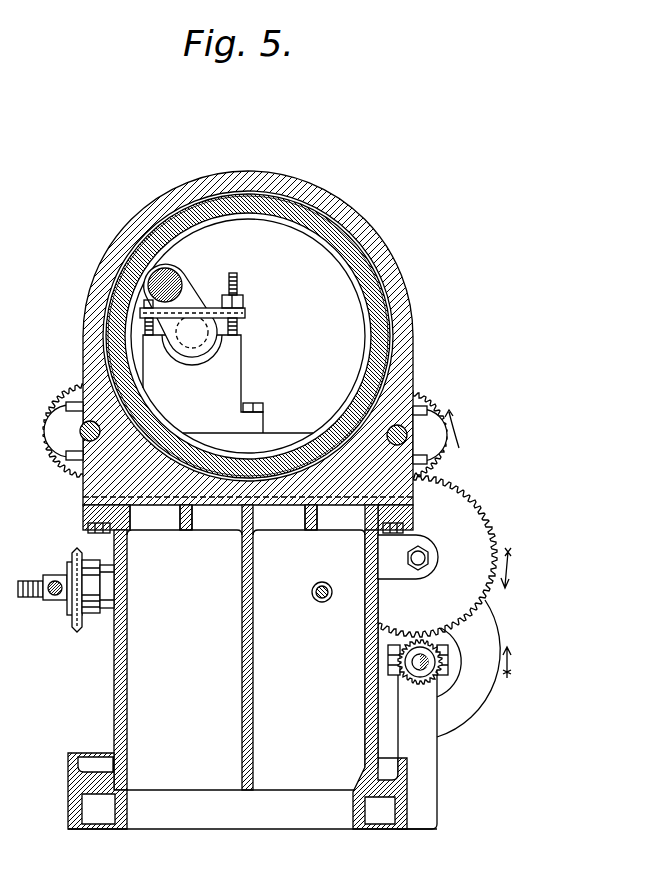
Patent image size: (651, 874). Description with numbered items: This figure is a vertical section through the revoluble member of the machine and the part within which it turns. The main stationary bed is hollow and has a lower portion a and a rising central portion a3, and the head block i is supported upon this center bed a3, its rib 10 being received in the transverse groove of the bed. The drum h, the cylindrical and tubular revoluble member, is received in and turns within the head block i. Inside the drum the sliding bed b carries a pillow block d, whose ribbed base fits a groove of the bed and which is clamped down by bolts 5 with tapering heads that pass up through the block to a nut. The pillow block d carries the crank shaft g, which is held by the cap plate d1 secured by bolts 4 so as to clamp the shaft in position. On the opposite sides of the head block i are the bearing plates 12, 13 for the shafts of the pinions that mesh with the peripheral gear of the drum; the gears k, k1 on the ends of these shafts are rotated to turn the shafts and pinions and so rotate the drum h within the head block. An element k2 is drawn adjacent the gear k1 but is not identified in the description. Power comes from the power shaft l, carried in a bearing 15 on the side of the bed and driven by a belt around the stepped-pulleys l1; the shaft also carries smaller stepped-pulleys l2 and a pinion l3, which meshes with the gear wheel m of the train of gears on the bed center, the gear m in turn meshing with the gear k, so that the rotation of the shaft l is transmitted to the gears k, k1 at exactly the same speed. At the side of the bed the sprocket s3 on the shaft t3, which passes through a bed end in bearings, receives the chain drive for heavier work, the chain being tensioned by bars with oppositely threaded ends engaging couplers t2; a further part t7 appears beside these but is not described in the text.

The head block i is at (359, 212).
The drum h is at (345, 236).
The bolts 4 is at (240, 284).
The cap plate d1 is at (246, 313).
The crank shaft g is at (198, 350).
The pillow block d is at (242, 378).
The bolts 5 is at (260, 406).
The sliding bed b is at (322, 602).
The gear k1 is at (68, 400).
The bearing boss k2 is at (77, 420).
The bearing plate 13 is at (82, 435).
The gear k is at (439, 405).
The bearing plate 12 is at (416, 436).
The gear wheel m is at (444, 556).
The rising central portion a3 is at (82, 514).
The rib 10 is at (173, 507).
The shaft t3 is at (32, 598).
The sprocket s3 is at (70, 604).
The valve plate t7 is at (76, 622).
The couplers t2 is at (81, 624).
The bearing 15 is at (403, 639).
The power shaft l is at (417, 673).
The smaller stepped-pulleys l2 is at (455, 658).
The pinion l3 is at (428, 684).
The stepped-pulleys l1 is at (481, 713).
The lower portion a is at (75, 729).